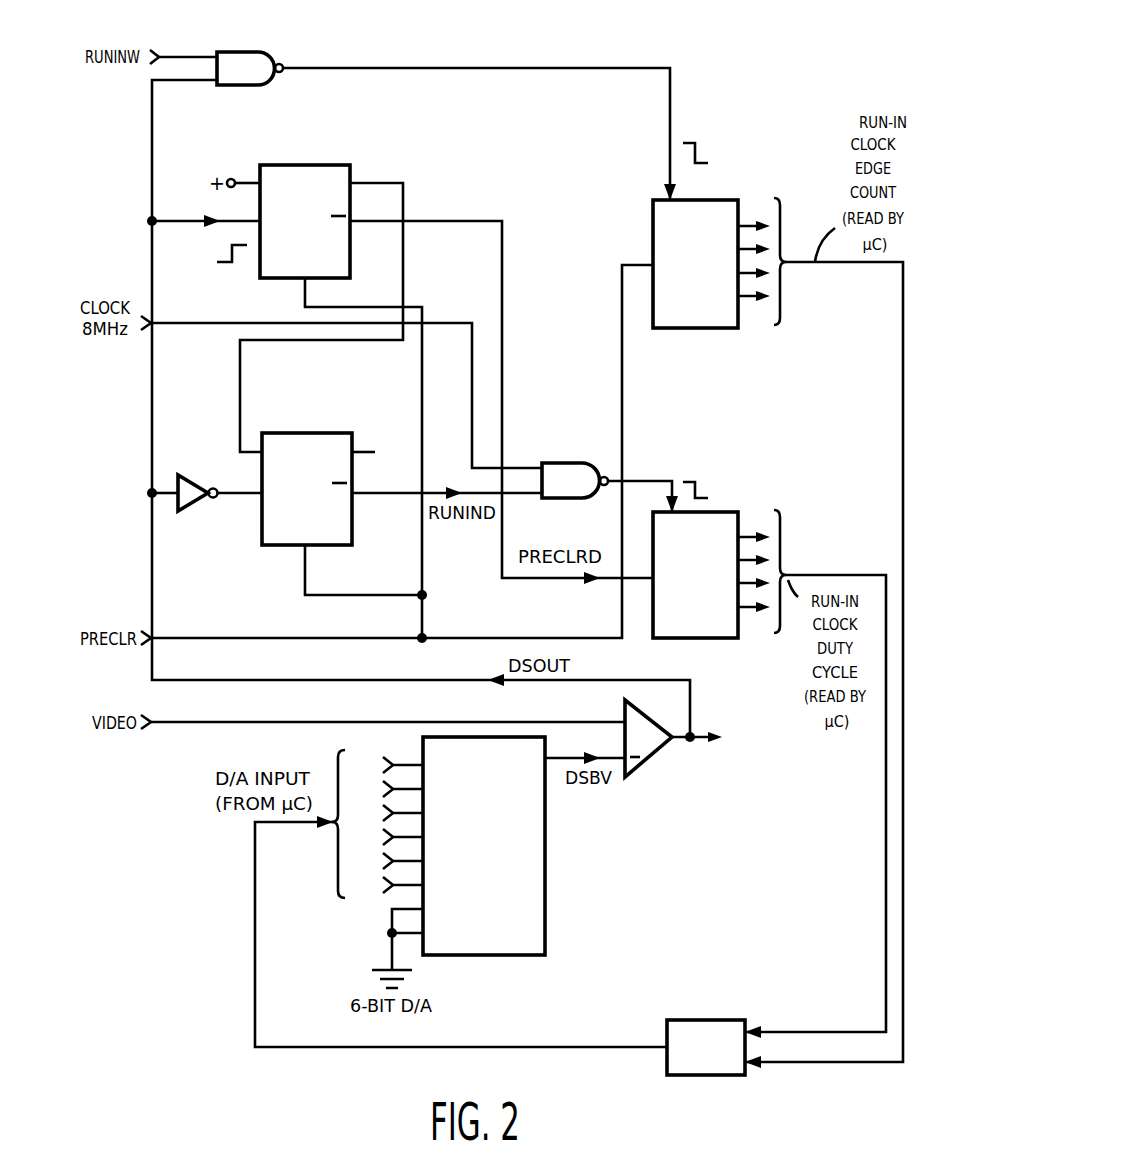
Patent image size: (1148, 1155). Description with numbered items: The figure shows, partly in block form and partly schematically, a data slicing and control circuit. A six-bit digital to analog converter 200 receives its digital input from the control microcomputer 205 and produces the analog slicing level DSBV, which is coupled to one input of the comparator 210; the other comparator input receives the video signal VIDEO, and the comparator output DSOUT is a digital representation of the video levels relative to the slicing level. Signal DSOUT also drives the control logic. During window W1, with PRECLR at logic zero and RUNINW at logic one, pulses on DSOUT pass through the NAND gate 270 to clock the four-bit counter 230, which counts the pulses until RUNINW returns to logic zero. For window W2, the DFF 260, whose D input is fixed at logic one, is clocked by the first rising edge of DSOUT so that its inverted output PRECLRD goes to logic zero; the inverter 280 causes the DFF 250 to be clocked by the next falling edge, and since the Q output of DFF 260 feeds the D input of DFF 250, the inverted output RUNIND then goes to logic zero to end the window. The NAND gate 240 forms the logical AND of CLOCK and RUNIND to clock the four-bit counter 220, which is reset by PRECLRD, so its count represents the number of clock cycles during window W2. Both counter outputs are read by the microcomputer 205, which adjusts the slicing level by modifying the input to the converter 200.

The 6-bit digital to analog converter 200 is at (545, 888).
The control microcomputer 205 is at (678, 1019).
The comparator 210 is at (654, 724).
The counter 220 is at (717, 512).
The counter 230 is at (715, 200).
The NAND gate 240 is at (560, 462).
The DFF 250 is at (352, 526).
The DFF 260 is at (315, 165).
The NAND gate 270 is at (262, 52).
The inverter 280 is at (207, 509).